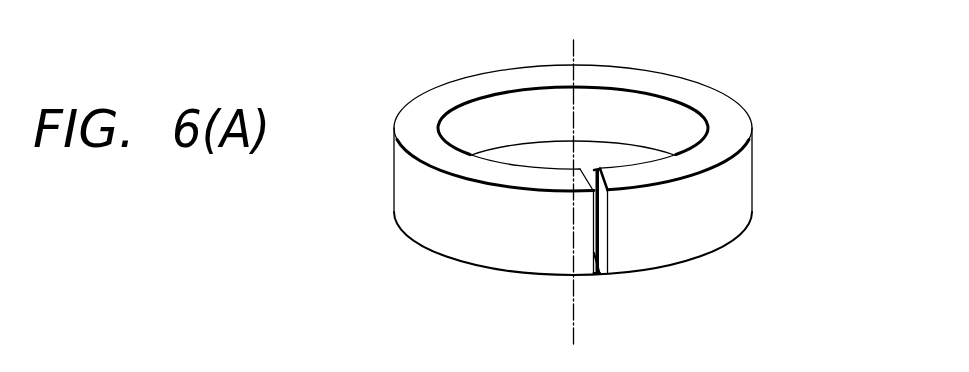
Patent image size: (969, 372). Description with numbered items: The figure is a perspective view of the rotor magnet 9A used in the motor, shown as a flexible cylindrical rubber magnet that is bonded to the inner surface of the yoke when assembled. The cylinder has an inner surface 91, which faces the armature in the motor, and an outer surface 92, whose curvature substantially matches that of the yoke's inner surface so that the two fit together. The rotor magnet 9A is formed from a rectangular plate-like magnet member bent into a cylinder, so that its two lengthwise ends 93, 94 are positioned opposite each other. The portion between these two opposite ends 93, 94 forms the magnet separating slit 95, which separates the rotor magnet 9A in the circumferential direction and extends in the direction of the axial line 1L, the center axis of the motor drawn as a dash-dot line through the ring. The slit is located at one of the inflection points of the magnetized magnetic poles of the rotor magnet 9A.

The axial line 1L is at (574, 41).
The rotor magnet 9A is at (708, 58).
The inner surface 91 is at (623, 100).
The outer surface 92 is at (461, 246).
The end of magnet member 93 is at (592, 228).
The end of magnet member 94 is at (608, 231).
The magnet separating slit 95 is at (597, 278).